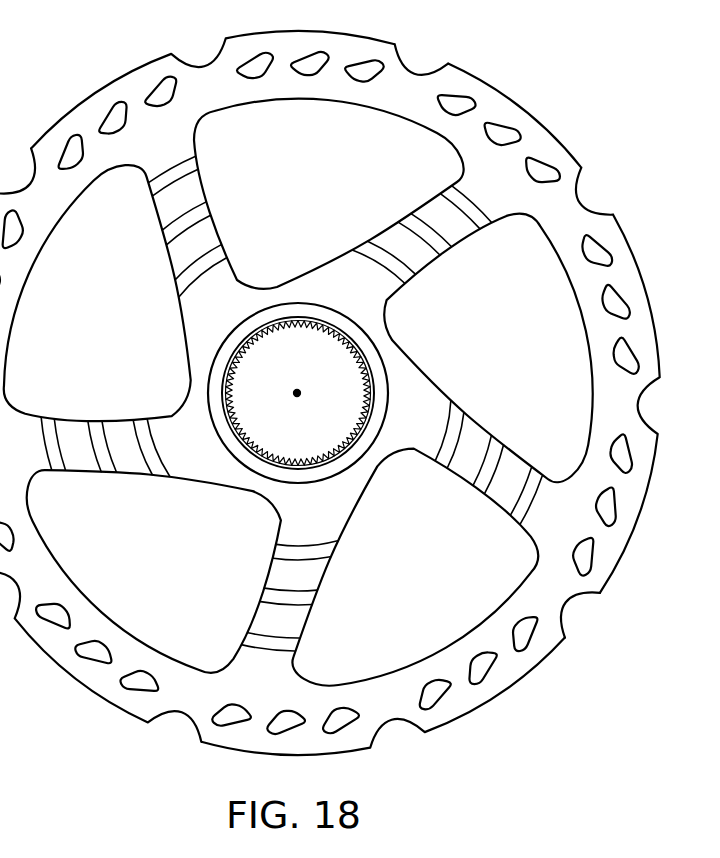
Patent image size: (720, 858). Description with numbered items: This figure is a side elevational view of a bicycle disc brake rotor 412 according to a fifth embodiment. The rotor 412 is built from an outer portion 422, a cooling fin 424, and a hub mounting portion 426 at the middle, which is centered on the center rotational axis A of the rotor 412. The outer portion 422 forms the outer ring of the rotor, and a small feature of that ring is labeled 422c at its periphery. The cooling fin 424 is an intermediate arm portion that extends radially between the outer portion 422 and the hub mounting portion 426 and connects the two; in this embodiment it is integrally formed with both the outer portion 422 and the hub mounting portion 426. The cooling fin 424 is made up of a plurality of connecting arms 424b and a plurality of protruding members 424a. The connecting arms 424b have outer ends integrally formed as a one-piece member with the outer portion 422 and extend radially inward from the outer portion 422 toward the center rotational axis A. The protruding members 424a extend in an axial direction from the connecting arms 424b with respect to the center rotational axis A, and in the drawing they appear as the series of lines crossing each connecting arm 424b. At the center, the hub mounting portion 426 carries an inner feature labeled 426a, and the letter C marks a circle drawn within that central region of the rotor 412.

The bicycle disc brake rotor 412 is at (330, 380).
The outer portion 422 is at (569, 141).
The outer ring recess 422c is at (561, 598).
The cooling fin 424 is at (136, 250).
The protruding members 424a is at (530, 515).
The connecting arms 424b is at (128, 473).
The hub mounting portion 426 is at (412, 351).
The hub spline 426a is at (247, 391).
The center rotational axis A is at (300, 389).
The spline circle C is at (299, 320).